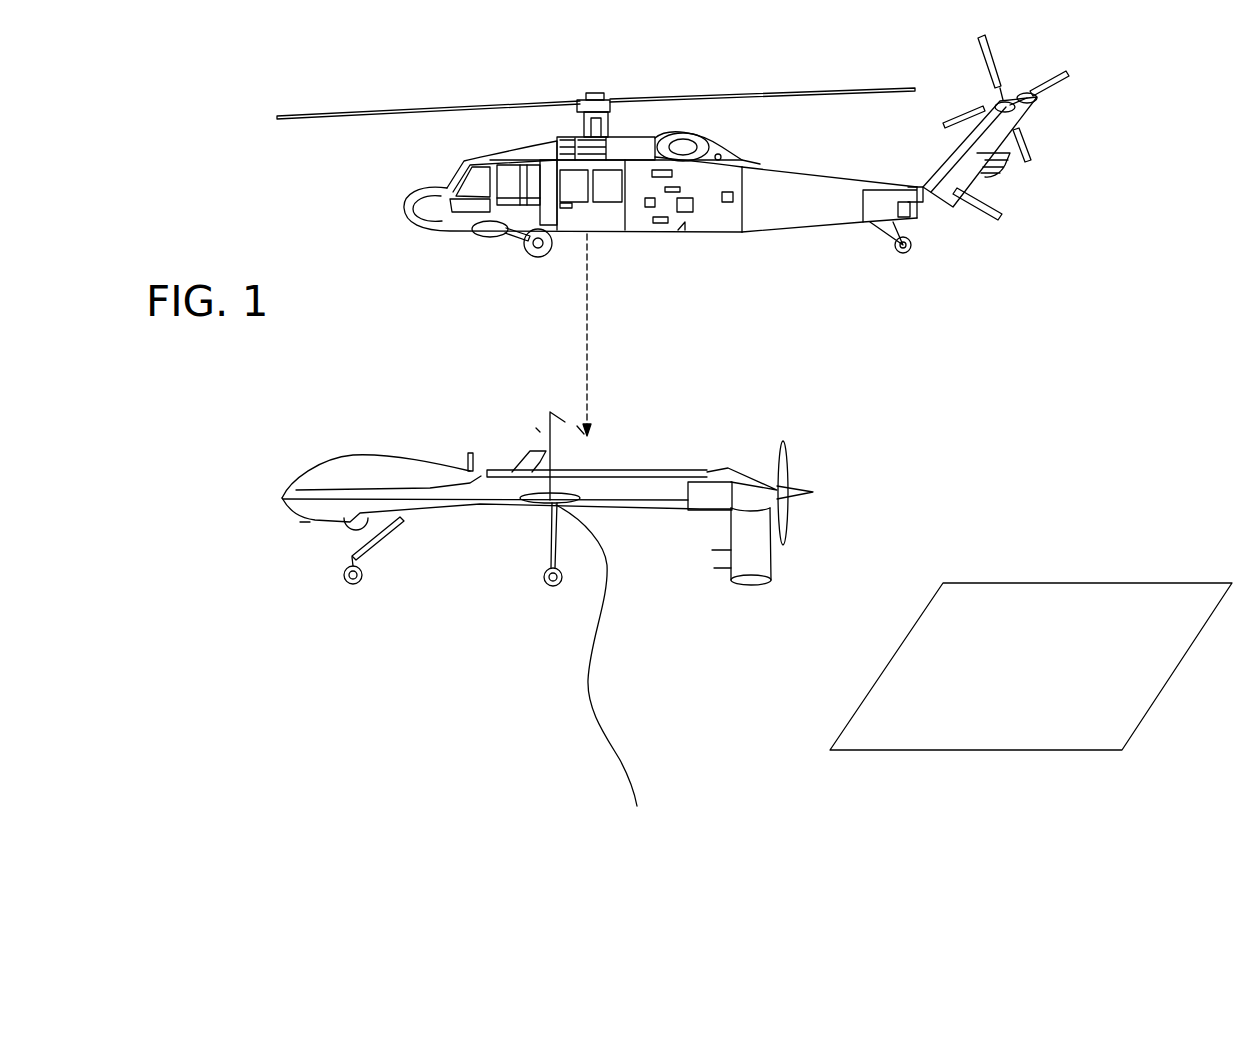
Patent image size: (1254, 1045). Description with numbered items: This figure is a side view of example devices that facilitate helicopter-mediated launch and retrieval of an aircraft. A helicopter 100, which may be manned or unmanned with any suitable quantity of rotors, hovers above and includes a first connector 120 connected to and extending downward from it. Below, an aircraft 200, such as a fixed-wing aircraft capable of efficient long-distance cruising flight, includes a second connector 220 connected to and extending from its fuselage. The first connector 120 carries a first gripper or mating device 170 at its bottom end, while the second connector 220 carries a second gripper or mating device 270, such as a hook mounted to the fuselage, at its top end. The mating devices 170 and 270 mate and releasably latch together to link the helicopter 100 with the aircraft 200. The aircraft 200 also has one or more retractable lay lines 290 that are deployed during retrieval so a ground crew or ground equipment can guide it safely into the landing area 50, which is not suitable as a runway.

The landing area 50 is at (1166, 685).
The helicopter 100 is at (1058, 163).
The first connector 120 is at (601, 340).
The first mating device 170 is at (588, 438).
The aircraft 200 is at (848, 491).
The second connector 220 is at (534, 430).
The second mating device 270 is at (558, 411).
The retractable lay lines 290 is at (630, 763).